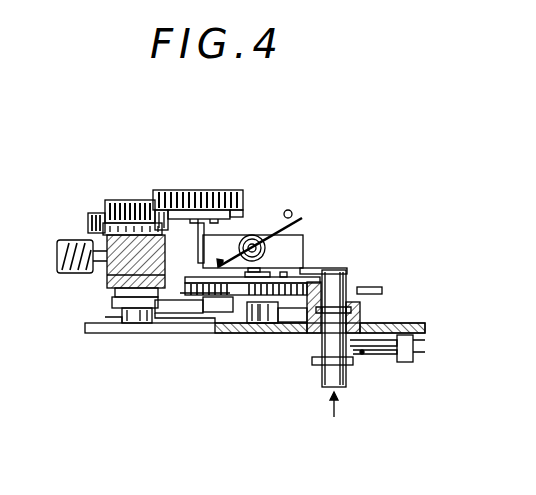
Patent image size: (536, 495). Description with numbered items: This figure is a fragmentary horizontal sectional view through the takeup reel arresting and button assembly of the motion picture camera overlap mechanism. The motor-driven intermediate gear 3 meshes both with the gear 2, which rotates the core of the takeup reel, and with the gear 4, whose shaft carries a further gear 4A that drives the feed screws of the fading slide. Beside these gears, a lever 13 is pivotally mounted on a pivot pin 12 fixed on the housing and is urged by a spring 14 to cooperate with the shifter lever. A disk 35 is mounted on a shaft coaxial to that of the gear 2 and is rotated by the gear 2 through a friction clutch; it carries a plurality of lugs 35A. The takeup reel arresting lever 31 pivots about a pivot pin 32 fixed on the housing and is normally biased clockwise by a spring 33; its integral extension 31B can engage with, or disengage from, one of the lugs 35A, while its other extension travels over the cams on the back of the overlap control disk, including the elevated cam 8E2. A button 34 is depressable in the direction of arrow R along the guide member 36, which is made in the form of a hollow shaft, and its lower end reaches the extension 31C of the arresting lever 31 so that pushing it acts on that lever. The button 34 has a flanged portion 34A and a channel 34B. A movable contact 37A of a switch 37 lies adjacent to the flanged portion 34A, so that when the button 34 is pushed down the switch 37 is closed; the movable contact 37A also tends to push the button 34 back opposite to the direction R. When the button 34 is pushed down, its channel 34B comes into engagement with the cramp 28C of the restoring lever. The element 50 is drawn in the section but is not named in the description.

The gear 2 is at (185, 190).
The intermediate gear 3 is at (128, 200).
The gear 4 is at (88, 222).
The gear 4A is at (108, 270).
The pivot pin 12 is at (132, 325).
The lever 13 is at (172, 333).
The spring 14 is at (197, 296).
The hatched plate 50 is at (236, 333).
The elevated cam 8E2 is at (307, 276).
The takeup reel arresting lever 31 is at (295, 237).
The integral extension 31B is at (197, 227).
The extension 31C is at (342, 268).
The pivot pin 32 is at (254, 240).
The spring 33 is at (298, 217).
The disk 35 is at (213, 190).
The lugs 35A is at (240, 217).
The cramp 28C is at (370, 287).
The button 34 is at (322, 347).
The flanged portion 34A is at (354, 365).
The channel 34B is at (315, 333).
The guide member 36 is at (360, 312).
The switch 37 is at (420, 345).
The movable contact 37A is at (375, 354).
The arrow R is at (334, 422).